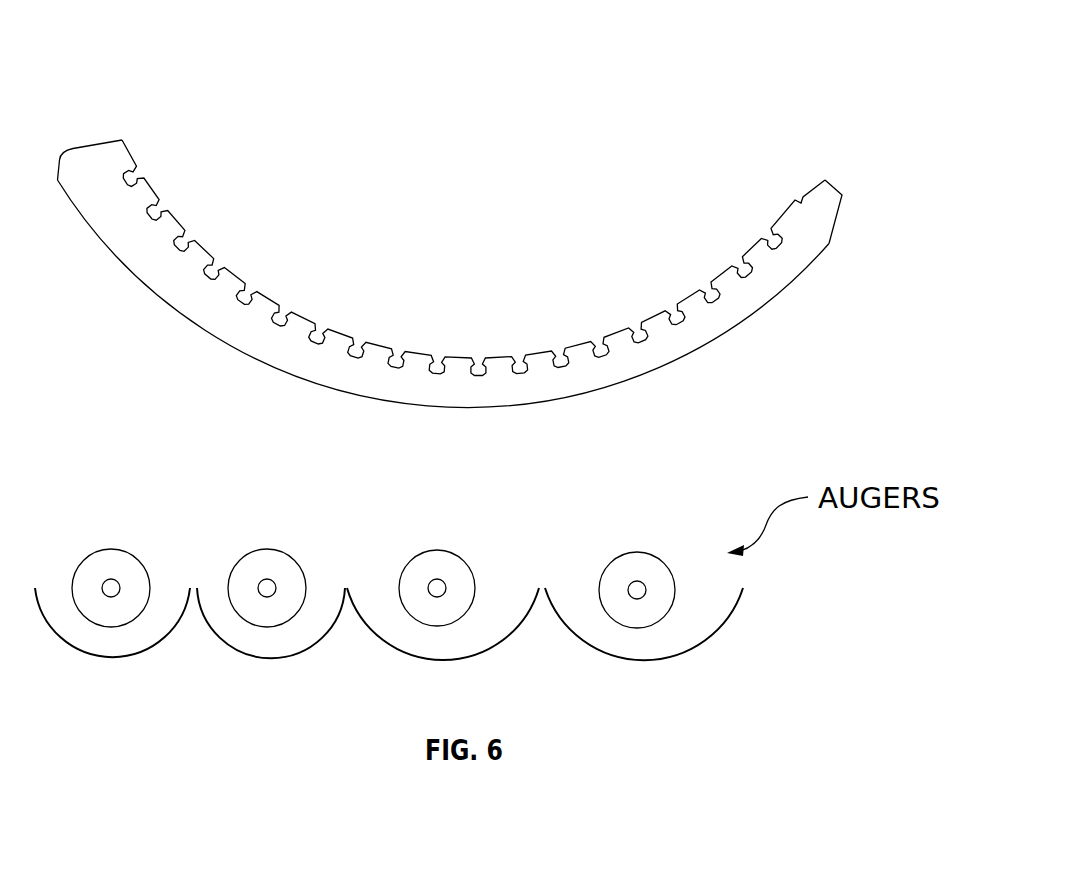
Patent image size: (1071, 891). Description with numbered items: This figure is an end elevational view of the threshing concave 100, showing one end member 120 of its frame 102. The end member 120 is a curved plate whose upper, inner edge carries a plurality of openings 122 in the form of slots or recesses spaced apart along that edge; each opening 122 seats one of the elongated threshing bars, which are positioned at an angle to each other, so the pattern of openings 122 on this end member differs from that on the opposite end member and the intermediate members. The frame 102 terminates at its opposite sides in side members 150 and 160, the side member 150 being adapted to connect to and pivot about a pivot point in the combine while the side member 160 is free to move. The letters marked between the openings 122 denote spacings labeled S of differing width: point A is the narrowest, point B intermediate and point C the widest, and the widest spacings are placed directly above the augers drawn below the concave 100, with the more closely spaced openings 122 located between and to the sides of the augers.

The threshing concave 100 is at (636, 50).
The frame 102 is at (278, 392).
The end member 120 is at (607, 372).
The openings 122 is at (516, 372).
The side member 150 is at (825, 178).
The side member 160 is at (108, 140).
The land / spacing between slots S is at (272, 303).